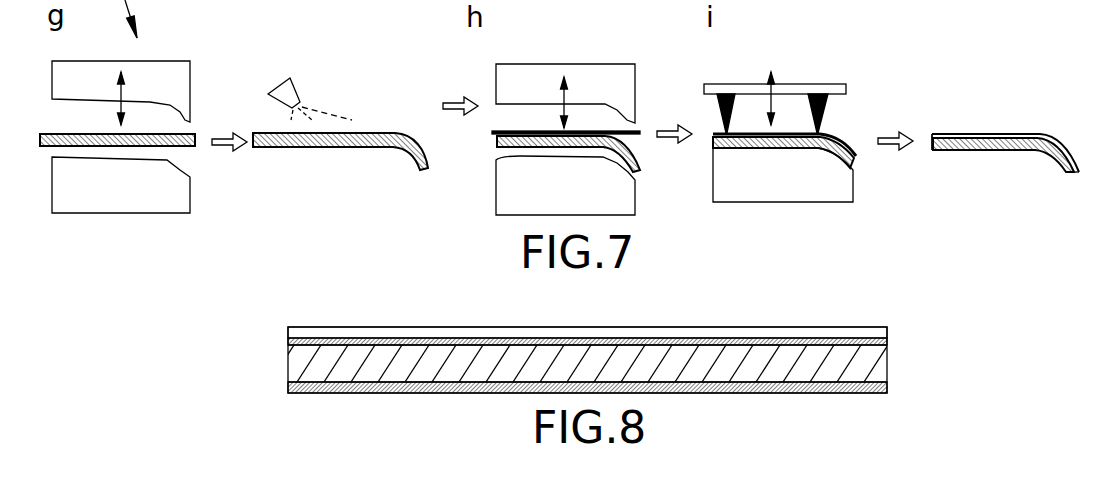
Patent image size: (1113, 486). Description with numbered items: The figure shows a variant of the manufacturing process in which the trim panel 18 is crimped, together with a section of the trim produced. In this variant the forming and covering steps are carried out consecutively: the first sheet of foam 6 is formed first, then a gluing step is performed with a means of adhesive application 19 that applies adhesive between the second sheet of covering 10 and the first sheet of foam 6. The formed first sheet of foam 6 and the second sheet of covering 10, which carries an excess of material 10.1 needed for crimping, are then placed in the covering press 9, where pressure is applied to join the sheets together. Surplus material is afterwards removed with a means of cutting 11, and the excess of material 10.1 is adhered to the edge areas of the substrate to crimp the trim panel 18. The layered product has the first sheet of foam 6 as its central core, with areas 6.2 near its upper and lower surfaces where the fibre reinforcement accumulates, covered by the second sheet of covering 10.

In FIG. 7, the first sheet of foam 6 is at (196, 146).
In FIG. 8, the first sheet of foam 6 is at (300, 373).
In FIG. 8, the areas closest to the upper and lower surfaces of the first sheet of foam 6.2 is at (787, 343).
In FIG. 7, the covering press 9 is at (482, 75).
In FIG. 7, the second sheet of covering 10 is at (640, 131).
In FIG. 8, the second sheet of covering 10 is at (722, 335).
In FIG. 7, the excess of material 10.1 is at (932, 143).
In FIG. 7, the means of cutting 11 is at (803, 88).
In FIG. 7, the trim panel 18 is at (1007, 122).
In FIG. 8, the trim panel 18 is at (377, 317).
In FIG. 7, the means of adhesive application 19 is at (285, 91).